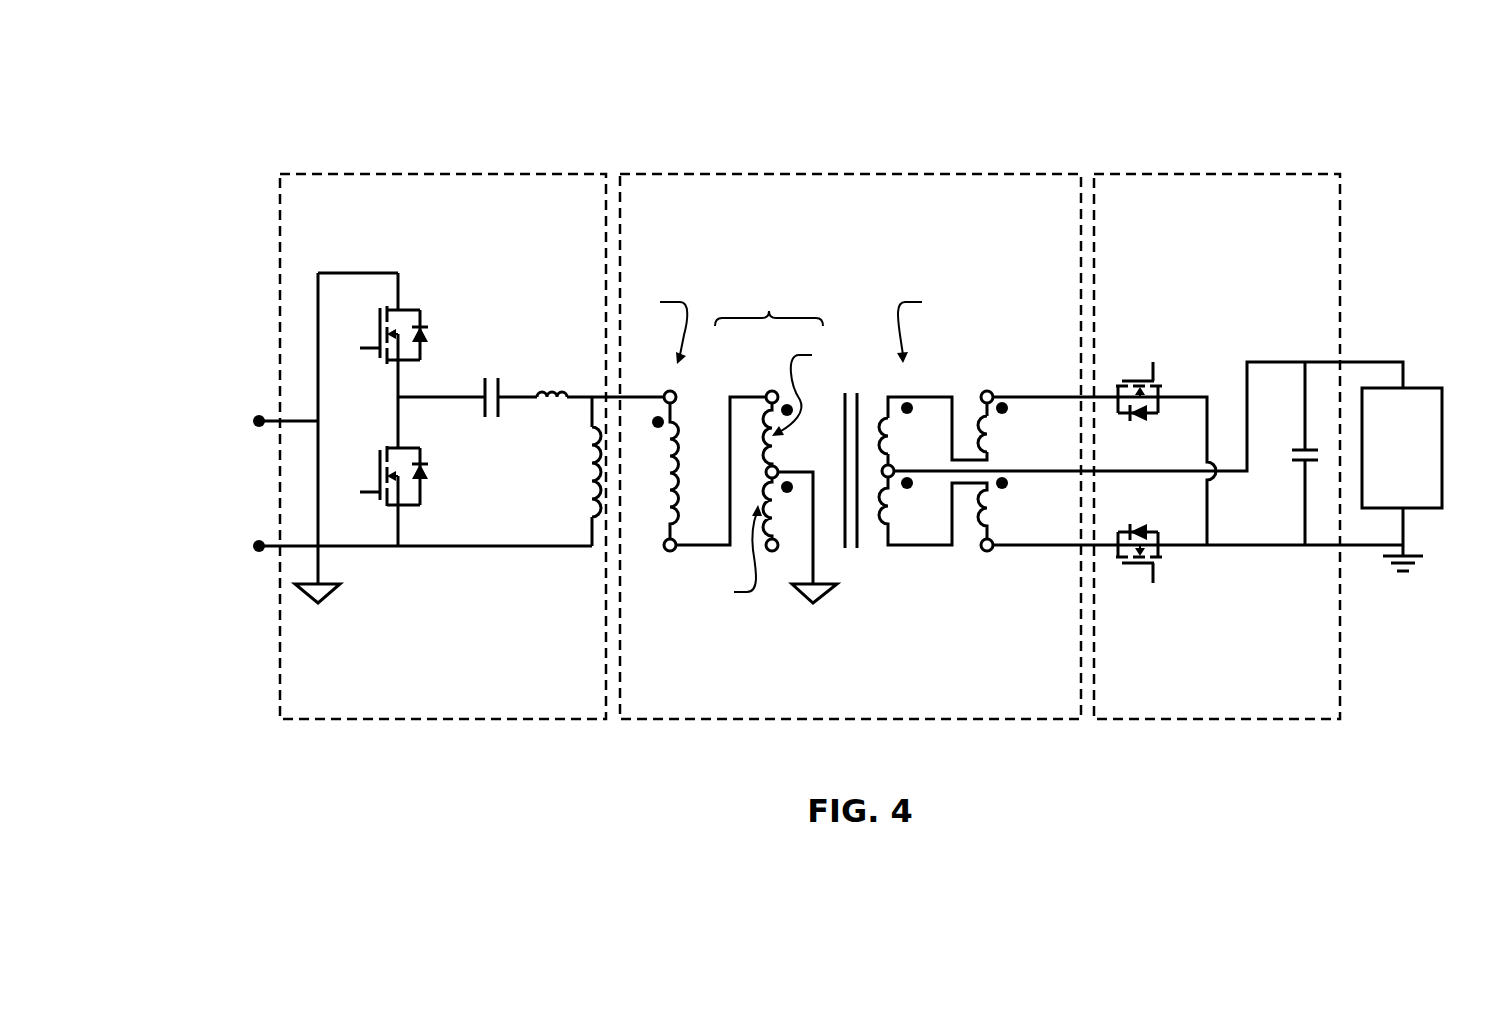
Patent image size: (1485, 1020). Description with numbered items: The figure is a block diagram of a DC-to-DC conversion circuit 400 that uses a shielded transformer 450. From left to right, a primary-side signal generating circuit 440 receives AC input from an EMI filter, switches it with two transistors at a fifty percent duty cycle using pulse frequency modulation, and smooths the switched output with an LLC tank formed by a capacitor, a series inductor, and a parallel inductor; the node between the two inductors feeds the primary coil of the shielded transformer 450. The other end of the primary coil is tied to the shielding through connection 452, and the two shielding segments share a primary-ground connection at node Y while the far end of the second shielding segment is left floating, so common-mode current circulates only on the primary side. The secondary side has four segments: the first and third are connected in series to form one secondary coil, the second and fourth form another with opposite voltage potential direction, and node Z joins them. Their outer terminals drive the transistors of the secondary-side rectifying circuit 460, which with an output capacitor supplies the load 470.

The DC-to-DC conversion circuit 400 is at (268, 98).
The primary-side signal generating circuit 440 is at (394, 446).
The shielded transformer 450 is at (850, 446).
The connection 452 is at (729, 394).
The secondary-side rectifying circuit 460 is at (1148, 446).
The load 470 is at (1402, 479).